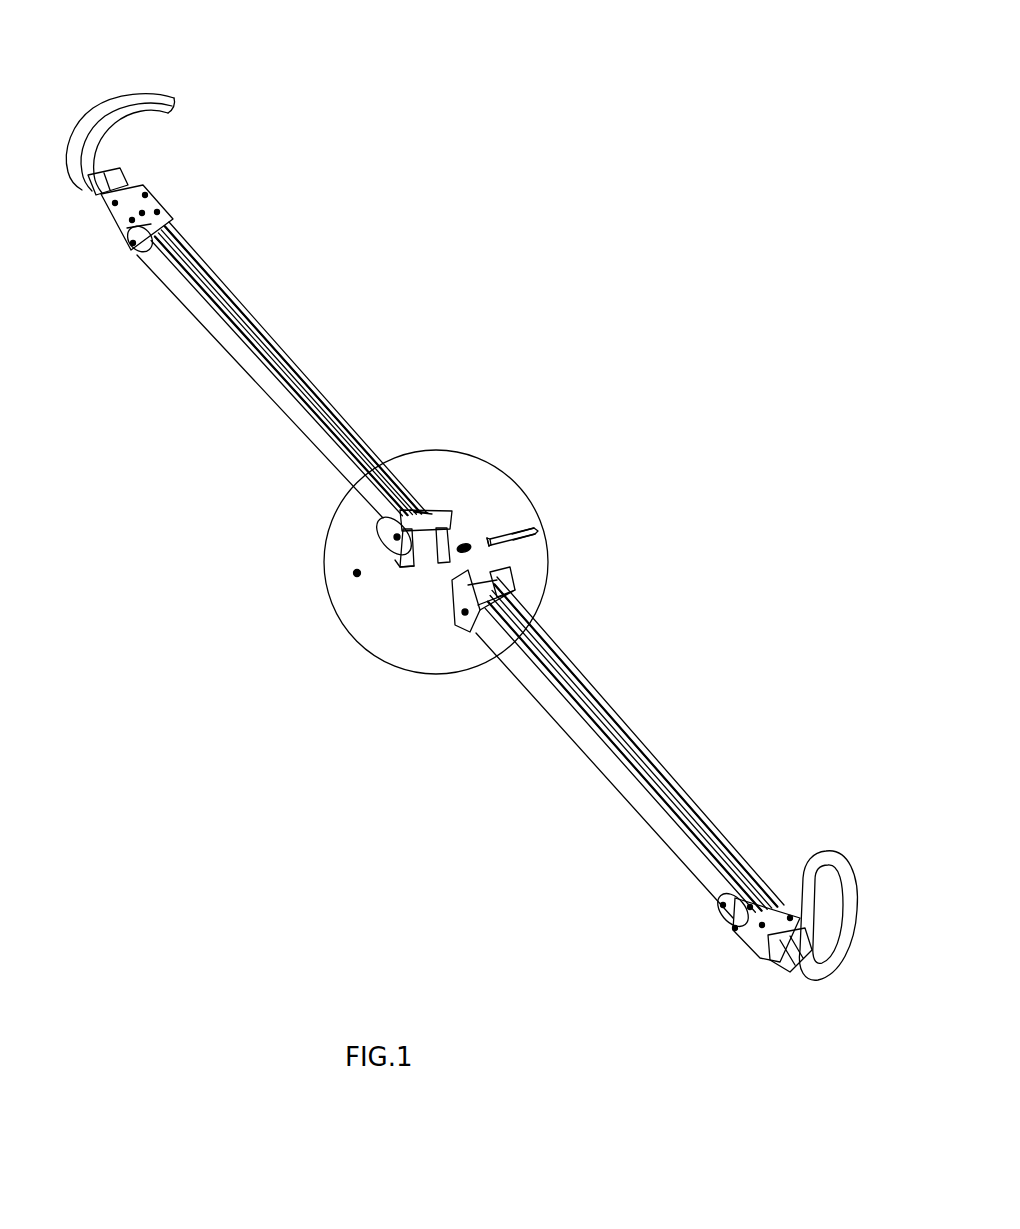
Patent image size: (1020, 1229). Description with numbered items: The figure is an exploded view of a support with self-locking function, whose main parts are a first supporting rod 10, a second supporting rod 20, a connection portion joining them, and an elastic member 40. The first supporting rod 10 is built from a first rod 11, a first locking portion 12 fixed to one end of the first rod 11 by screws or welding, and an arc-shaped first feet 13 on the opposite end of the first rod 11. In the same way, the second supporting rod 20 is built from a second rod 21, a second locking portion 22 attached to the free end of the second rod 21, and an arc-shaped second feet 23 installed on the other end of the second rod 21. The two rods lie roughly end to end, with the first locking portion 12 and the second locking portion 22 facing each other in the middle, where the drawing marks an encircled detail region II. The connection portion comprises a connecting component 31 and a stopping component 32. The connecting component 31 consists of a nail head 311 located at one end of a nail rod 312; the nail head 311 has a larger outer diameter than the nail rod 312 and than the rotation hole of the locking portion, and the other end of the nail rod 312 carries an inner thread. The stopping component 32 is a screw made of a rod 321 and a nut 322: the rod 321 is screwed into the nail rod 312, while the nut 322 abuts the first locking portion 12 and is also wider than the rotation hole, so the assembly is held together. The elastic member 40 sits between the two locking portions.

The first supporting rod 10 is at (243, 352).
The first rod 11 is at (333, 410).
The first locking portion 12 is at (430, 503).
The first feet 13 is at (172, 97).
The second supporting rod 20 is at (610, 750).
The second rod 21 is at (588, 687).
The second locking portion 22 is at (507, 572).
The second feet 23 is at (817, 850).
The connecting component 31 is at (732, 438).
The nail head 311 is at (535, 530).
The nail rod 312 is at (493, 538).
The stopping component 32 is at (203, 463).
The rod 321 is at (395, 560).
The nut 322 is at (355, 574).
The elastic member 40 is at (467, 543).
The enlarged detail region II is at (343, 632).